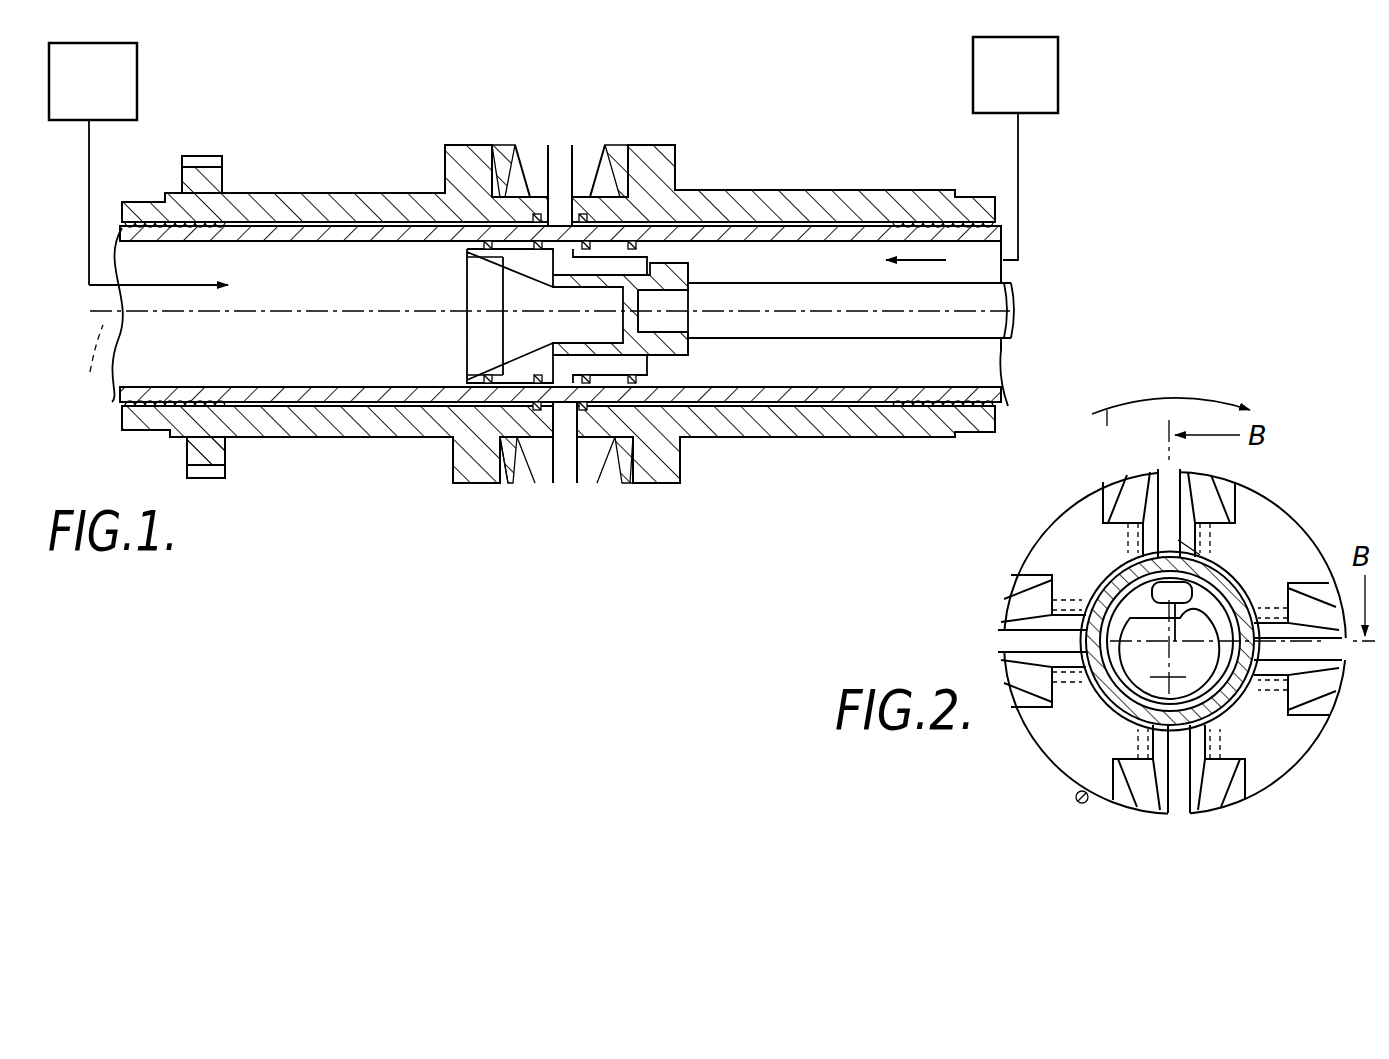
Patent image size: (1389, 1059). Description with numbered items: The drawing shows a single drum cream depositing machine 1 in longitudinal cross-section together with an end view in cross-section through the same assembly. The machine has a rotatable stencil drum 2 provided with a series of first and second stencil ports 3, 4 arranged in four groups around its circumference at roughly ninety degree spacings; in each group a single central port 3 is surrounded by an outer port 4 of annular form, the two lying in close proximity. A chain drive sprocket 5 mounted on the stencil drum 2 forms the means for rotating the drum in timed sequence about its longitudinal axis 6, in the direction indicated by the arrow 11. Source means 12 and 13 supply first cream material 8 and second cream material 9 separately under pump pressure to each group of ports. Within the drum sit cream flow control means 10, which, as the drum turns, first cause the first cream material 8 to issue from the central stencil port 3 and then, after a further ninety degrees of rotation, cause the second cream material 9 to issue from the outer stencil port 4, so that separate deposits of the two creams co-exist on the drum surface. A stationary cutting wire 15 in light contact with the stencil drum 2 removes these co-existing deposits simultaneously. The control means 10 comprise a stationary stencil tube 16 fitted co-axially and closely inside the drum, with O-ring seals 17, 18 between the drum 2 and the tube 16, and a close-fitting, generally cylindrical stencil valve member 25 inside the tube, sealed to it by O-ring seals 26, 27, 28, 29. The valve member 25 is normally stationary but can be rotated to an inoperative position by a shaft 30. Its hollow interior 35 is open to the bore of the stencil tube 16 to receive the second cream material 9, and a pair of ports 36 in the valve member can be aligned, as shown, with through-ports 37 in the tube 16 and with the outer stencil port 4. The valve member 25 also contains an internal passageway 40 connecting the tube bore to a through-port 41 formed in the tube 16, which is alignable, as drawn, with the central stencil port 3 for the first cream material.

In FIG. 1, the cream depositing machine 1 is at (823, 160).
In FIG. 2, the cream depositing machine 1 is at (1258, 476).
In FIG. 1, the rotatable stencil drum 2 is at (768, 190).
In FIG. 2, the rotatable stencil drum 2 is at (1018, 555).
In FIG. 1, the first stencil port 3 is at (560, 148).
In FIG. 2, the first stencil port 3 is at (1165, 476).
In FIG. 1, the second stencil port 4 is at (599, 150).
In FIG. 2, the second stencil port 4 is at (1199, 481).
In FIG. 1, the chain drive sprocket 5 is at (223, 186).
In FIG. 1, the longitudinal axis 6 is at (100, 315).
In FIG. 1, the first cream material 8 is at (946, 262).
In FIG. 1, the second cream material 9 is at (178, 290).
In FIG. 1, the cream flow control means 10 is at (444, 266).
In FIG. 2, the arrow 11 is at (1079, 431).
In FIG. 1, the source means 12 is at (970, 88).
In FIG. 1, the source means 13 is at (185, 66).
In FIG. 2, the stationary cutting wire 15 is at (1076, 800).
In FIG. 1, the stationary stencil tube 16 is at (229, 386).
In FIG. 2, the stationary stencil tube 16 is at (1252, 718).
In FIG. 1, the O-ring seal 17 is at (506, 480).
In FIG. 1, the O-ring seal 18 is at (598, 472).
In FIG. 1, the stencil valve member 25 is at (705, 335).
In FIG. 2, the stencil valve member 25 is at (1112, 714).
In FIG. 1, the O-ring seal 26 is at (470, 428).
In FIG. 1, the O-ring seal 27 is at (503, 345).
In FIG. 1, the O-ring seal 28 is at (538, 375).
In FIG. 1, the O-ring seal 29 is at (704, 350).
In FIG. 1, the shaft 30 is at (975, 325).
In FIG. 1, the hollow interior 35 is at (468, 252).
In FIG. 2, the hollow interior 35 is at (1168, 661).
In FIG. 1, the ports 36 is at (486, 377).
In FIG. 1, the through-ports 37 is at (505, 440).
In FIG. 1, the internal passageway 40 is at (650, 268).
In FIG. 2, the internal passageway 40 is at (1170, 594).
In FIG. 1, the through-port 41 is at (540, 190).
In FIG. 2, the through-port 41 is at (1172, 542).